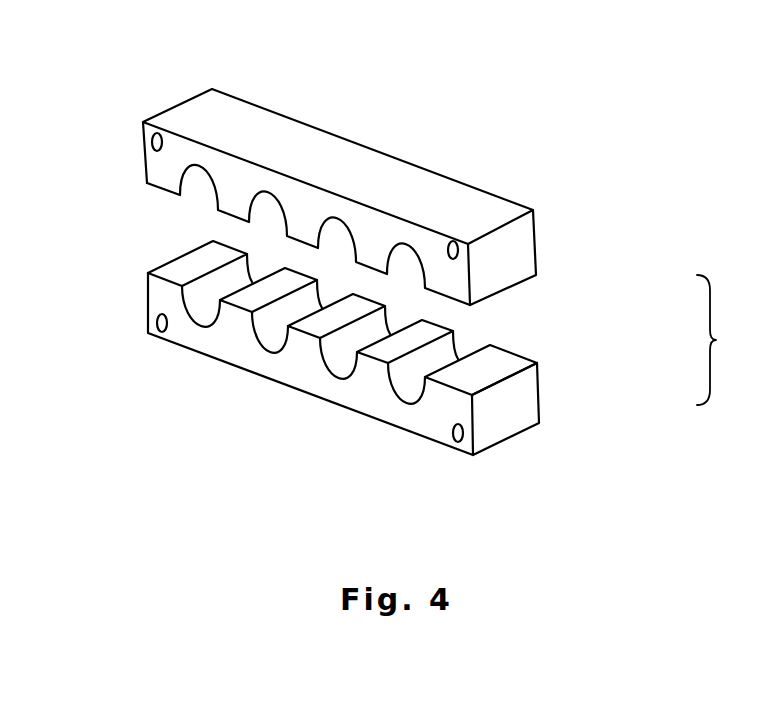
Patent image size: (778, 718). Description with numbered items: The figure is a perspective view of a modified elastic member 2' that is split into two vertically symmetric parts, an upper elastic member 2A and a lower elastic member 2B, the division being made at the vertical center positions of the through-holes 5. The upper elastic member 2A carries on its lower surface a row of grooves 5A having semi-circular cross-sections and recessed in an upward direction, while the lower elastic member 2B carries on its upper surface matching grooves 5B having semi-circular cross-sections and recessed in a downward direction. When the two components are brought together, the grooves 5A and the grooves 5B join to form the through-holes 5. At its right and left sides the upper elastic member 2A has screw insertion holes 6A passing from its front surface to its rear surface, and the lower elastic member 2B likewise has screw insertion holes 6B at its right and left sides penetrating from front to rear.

The upper elastic member 2A is at (535, 248).
The lower elastic member 2B is at (538, 400).
The elastic member 2' is at (719, 340).
The through-holes 5 is at (433, 357).
The grooves 5A is at (200, 165).
The grooves 5B is at (407, 402).
The screw insertion holes 6A is at (152, 143).
The screw insertion holes 6B is at (157, 328).